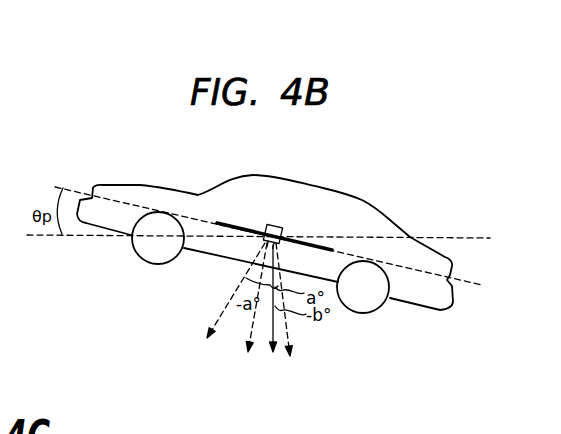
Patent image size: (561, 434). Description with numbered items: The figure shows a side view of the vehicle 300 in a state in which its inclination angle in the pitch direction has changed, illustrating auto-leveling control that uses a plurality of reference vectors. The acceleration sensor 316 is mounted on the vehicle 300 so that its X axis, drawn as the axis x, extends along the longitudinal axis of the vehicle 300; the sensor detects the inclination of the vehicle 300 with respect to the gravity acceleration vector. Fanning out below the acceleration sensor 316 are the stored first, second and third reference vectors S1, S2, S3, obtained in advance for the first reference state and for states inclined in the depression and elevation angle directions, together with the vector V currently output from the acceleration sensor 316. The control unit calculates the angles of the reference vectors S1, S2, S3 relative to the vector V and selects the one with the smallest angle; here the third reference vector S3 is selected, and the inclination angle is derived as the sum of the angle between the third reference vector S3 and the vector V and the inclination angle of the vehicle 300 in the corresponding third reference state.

The vehicle 300 is at (362, 200).
The acceleration sensor 316 is at (273, 223).
The X axis x is at (235, 221).
The vector V is at (273, 334).
The first reference vector S1 is at (251, 331).
The second reference vector S2 is at (220, 325).
The third reference vector S3 is at (287, 322).